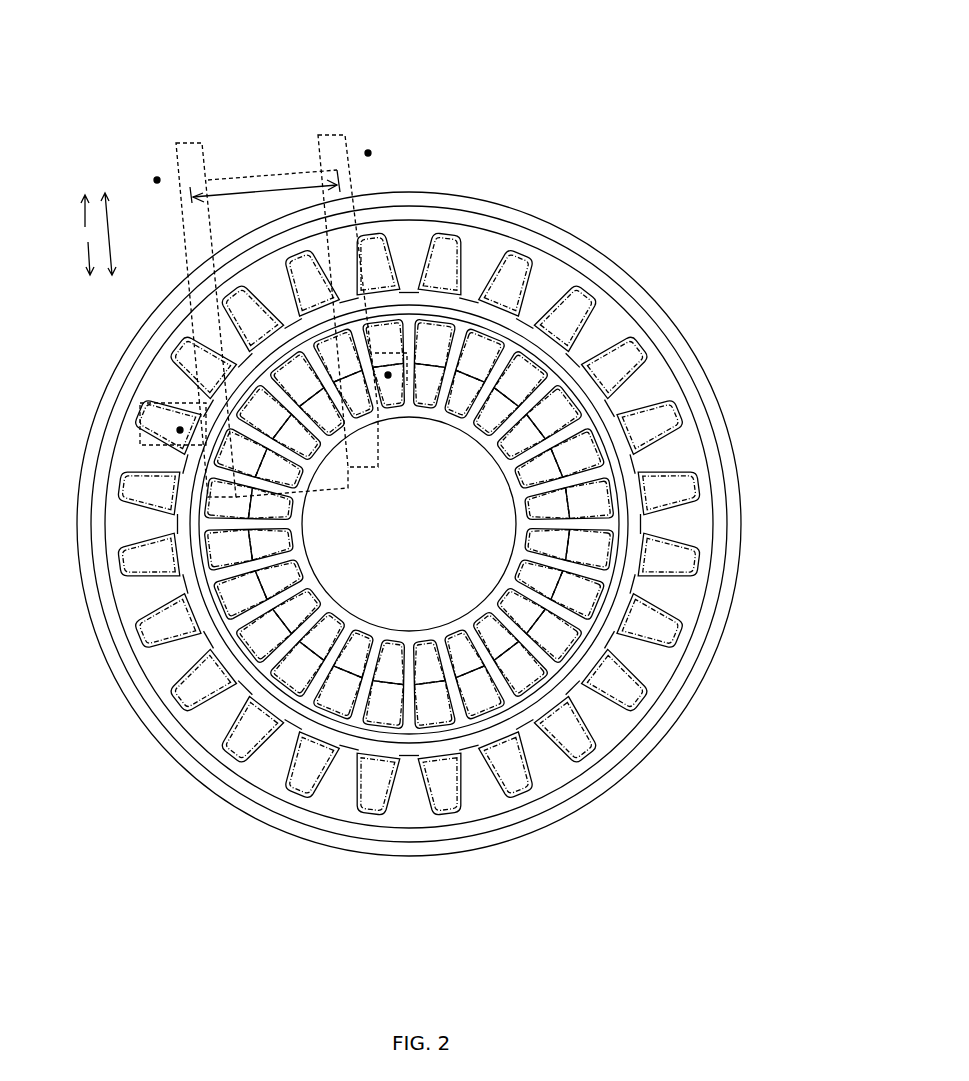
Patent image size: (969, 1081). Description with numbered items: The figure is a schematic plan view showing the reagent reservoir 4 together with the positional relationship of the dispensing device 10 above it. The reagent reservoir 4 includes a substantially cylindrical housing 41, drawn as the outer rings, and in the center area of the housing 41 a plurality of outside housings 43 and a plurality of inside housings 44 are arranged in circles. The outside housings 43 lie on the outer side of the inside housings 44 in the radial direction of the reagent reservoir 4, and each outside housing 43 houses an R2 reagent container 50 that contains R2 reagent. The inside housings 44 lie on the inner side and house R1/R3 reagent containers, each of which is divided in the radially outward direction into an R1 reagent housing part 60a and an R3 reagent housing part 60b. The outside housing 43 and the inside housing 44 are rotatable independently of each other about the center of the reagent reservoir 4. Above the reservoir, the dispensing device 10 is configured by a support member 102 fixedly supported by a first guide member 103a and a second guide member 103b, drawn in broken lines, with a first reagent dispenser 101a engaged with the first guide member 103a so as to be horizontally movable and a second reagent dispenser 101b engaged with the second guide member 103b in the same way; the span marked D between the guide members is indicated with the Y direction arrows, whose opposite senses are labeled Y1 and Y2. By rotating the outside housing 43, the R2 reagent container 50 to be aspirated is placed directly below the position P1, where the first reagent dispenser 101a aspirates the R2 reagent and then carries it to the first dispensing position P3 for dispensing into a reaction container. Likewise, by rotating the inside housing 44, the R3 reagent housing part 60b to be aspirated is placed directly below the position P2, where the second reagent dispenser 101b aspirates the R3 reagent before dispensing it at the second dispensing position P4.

The reagent reservoir 4 is at (409, 441).
The dispensing device 10 is at (241, 262).
The housing 41 is at (421, 194).
The outside housing 43 is at (575, 318).
The inside housing 44 is at (521, 380).
The R2 reagent container 50 is at (564, 312).
The R1 reagent housing part 60a is at (516, 376).
The R3 reagent housing part 60b is at (498, 402).
The first reagent dispenser 101a is at (198, 402).
The second reagent dispenser 101b is at (388, 340).
The support member 102 is at (298, 170).
The first guide member 103a is at (190, 152).
The second guide member 103b is at (333, 140).
The distance D is at (265, 193).
The position P1 is at (178, 430).
The position P2 is at (388, 378).
The first dispensing position P3 is at (157, 180).
The second dispensing position P4 is at (368, 153).
The Y direction Y is at (112, 234).
The Y1 direction Y1 is at (76, 258).
The Y2 direction Y2 is at (74, 213).